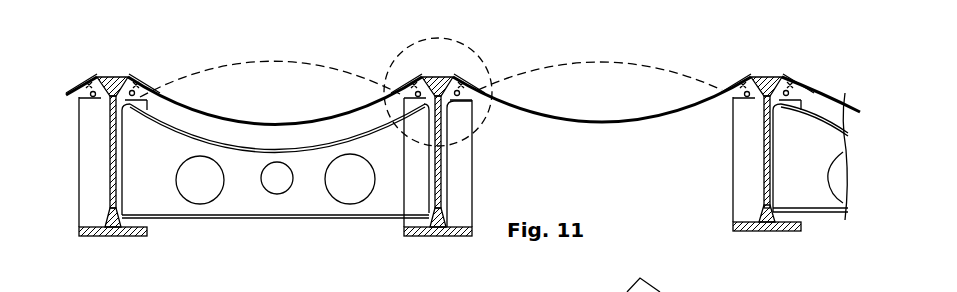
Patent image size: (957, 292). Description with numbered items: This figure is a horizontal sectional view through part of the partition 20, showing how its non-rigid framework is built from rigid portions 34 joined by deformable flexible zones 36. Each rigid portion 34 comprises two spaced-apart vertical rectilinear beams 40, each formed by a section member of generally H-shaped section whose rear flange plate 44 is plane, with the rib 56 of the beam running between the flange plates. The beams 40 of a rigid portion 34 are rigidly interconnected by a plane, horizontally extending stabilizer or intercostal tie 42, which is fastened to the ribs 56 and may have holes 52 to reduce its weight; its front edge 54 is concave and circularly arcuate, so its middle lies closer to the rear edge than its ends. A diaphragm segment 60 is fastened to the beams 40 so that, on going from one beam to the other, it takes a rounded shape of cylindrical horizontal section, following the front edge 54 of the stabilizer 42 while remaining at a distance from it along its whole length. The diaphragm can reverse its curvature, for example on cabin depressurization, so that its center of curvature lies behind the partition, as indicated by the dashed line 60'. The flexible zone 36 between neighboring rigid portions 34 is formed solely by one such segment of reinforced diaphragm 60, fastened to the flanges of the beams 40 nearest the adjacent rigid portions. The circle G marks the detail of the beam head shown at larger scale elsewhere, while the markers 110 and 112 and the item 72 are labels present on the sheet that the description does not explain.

The partition 20 is at (569, 25).
The rigid portion 34 is at (172, 205).
The deformable flexible zone 36 is at (632, 130).
The vertical rectilinear beam 40 is at (430, 173).
The intercostal tie 42 is at (308, 200).
The flange plate 44 is at (115, 233).
The hole 52 is at (216, 172).
The front edge 54 is at (298, 126).
The rib 56 is at (93, 180).
The diaphragm segment 60 is at (463, 76).
The reversed diaphragm 60' is at (431, 51).
The element 72 is at (626, 284).
The section 110 is at (278, 32).
The section 112 is at (369, 245).
The detail G is at (478, 47).